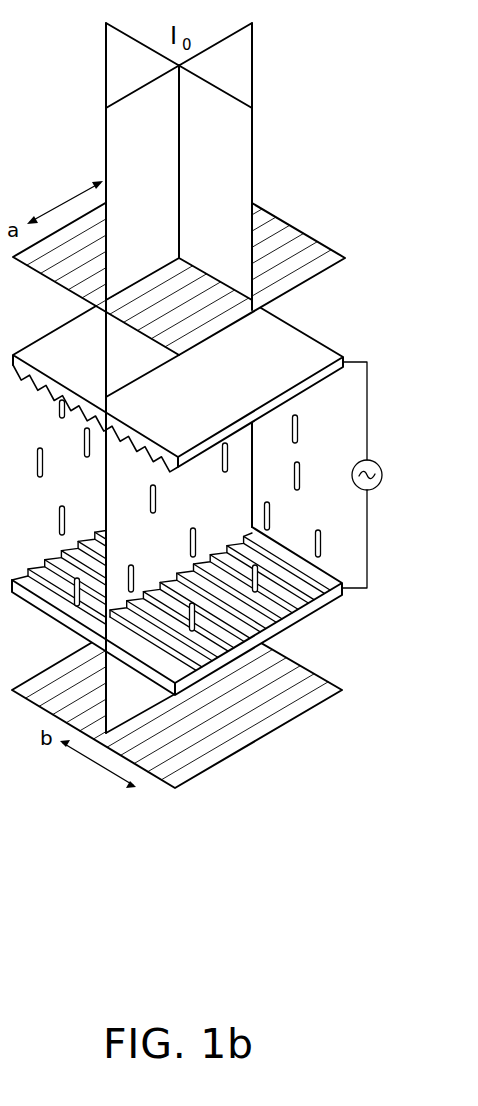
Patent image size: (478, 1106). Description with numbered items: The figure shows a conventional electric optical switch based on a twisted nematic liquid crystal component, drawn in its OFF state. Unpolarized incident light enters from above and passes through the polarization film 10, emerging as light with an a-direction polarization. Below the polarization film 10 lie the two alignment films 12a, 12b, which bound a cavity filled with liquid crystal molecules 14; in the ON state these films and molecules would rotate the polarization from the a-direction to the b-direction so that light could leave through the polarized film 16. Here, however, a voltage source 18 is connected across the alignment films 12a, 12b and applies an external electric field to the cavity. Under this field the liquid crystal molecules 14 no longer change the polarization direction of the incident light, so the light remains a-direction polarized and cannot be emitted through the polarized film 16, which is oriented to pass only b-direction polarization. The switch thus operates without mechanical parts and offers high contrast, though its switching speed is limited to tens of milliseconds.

The polarization film 10 is at (298, 226).
The alignment film 12a is at (297, 328).
The alignment film 12b is at (293, 631).
The liquid crystal molecules 14 is at (303, 427).
The polarized film 16 is at (270, 735).
The voltage source 18 is at (373, 460).